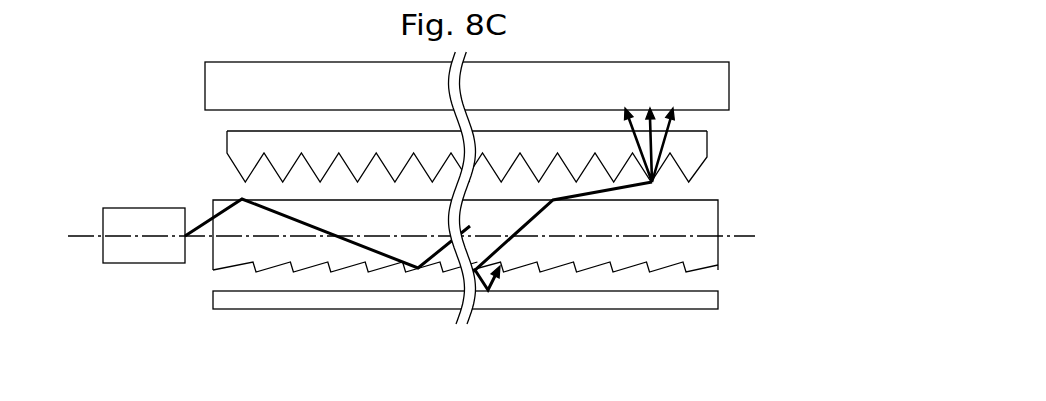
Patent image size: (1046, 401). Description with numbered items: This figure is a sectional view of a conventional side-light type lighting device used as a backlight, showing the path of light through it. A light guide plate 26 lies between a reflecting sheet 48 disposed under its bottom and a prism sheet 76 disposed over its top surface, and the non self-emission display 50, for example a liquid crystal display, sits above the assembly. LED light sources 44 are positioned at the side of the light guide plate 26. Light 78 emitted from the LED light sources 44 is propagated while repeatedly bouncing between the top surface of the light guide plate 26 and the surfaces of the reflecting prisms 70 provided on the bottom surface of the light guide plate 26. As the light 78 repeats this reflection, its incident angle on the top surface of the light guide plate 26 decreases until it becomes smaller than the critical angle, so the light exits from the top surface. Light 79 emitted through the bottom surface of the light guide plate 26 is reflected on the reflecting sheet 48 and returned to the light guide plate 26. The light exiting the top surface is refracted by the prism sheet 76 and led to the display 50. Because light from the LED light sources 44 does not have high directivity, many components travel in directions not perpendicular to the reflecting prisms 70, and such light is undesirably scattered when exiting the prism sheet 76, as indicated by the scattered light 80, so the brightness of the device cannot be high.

The light guide plate 26 is at (513, 293).
The LED light sources 44 is at (143, 250).
The reflecting sheet 48 is at (715, 300).
The display 50 is at (722, 75).
The reflecting prisms 70 is at (310, 268).
The prism sheet 76 is at (692, 150).
The light 78 is at (218, 210).
The light 79 is at (495, 290).
The scattered light 80 is at (700, 118).